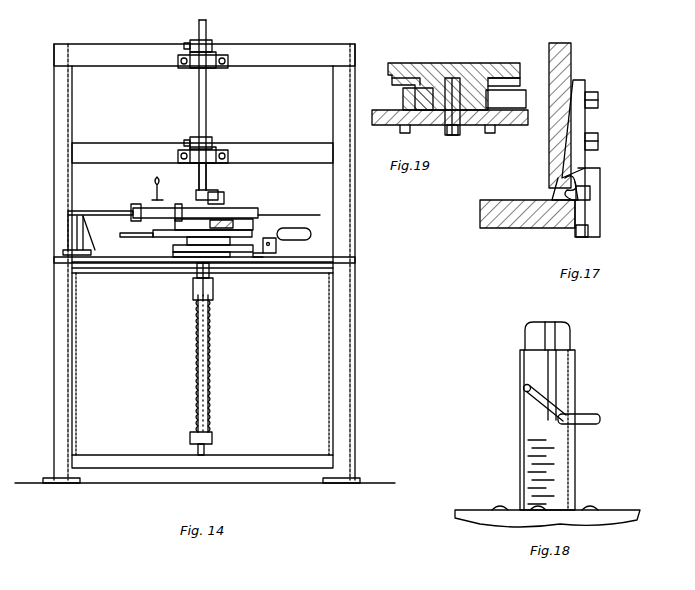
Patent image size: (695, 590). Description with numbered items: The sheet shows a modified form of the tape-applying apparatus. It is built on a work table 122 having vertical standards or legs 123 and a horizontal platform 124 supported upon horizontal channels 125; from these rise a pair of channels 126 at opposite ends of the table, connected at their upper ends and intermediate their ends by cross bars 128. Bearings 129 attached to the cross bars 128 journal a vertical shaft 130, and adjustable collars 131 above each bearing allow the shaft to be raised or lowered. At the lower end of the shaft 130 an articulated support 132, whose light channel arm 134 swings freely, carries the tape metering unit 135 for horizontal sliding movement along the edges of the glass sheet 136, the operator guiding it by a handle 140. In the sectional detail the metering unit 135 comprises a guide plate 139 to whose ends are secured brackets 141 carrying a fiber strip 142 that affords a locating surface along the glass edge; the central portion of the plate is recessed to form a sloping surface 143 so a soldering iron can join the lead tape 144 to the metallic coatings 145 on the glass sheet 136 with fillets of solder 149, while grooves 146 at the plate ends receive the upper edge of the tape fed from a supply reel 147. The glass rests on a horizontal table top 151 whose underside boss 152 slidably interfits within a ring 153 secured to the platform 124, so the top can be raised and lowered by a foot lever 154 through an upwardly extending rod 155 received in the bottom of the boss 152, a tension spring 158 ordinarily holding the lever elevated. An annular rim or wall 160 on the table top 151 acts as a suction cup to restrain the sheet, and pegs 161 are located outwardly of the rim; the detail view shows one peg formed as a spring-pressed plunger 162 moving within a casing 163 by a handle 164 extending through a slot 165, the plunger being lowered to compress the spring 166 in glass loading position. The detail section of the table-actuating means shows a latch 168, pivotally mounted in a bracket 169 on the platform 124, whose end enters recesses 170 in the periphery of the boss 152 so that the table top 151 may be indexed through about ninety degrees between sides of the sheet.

In FIG. 14, the work table 122 is at (345, 292).
In FIG. 14, the vertical standards or legs 123 is at (72, 360).
In FIG. 14, the horizontal platform 124 is at (103, 264).
In FIG. 19, the horizontal platform 124 is at (522, 122).
In FIG. 14, the horizontal channels 125 is at (131, 273).
In FIG. 14, the channels 126 is at (62, 180).
In FIG. 14, the cross bars 128 is at (285, 60).
In FIG. 14, the bearings 129 is at (218, 68).
In FIG. 14, the vertical shaft 130 is at (208, 103).
In FIG. 14, the adjustable collars 131 is at (210, 45).
In FIG. 14, the articulated support 132 is at (226, 198).
In FIG. 14, the arm 134 is at (175, 204).
In FIG. 14, the tape metering unit 135 is at (133, 206).
In FIG. 17, the tape metering unit 135 is at (562, 62).
In FIG. 14, the glass sheet 136 is at (250, 219).
In FIG. 17, the glass sheet 136 is at (520, 206).
In FIG. 17, the guide plate 139 is at (578, 95).
In FIG. 14, the handle 140 is at (153, 183).
In FIG. 17, the brackets 141 is at (600, 203).
In FIG. 17, the fiber strip 142 is at (580, 233).
In FIG. 17, the sloping surface 143 is at (572, 140).
In FIG. 14, the lead tape 144 is at (125, 211).
In FIG. 17, the lead tape 144 is at (568, 192).
In FIG. 17, the metallic coatings 145 is at (560, 200).
In FIG. 17, the grooves 146 is at (598, 155).
In FIG. 14, the supply reel 147 is at (88, 223).
In FIG. 17, the fillets of solder 149 is at (590, 186).
In FIG. 14, the table top 151 is at (155, 232).
In FIG. 19, the table top 151 is at (480, 66).
In FIG. 18, the table top 151 is at (622, 516).
In FIG. 14, the boss 152 is at (205, 248).
In FIG. 19, the boss 152 is at (442, 78).
In FIG. 14, the ring 153 is at (196, 283).
In FIG. 19, the ring 153 is at (405, 98).
In FIG. 14, the foot lever 154 is at (212, 437).
In FIG. 14, the rod 155 is at (206, 380).
In FIG. 19, the rod 155 is at (462, 132).
In FIG. 14, the tension spring 158 is at (210, 344).
In FIG. 14, the annular rim or wall 160 is at (215, 228).
In FIG. 14, the pegs 161 is at (175, 225).
In FIG. 18, the spring-pressed plunger 162 is at (575, 337).
In FIG. 14, the casing 163 is at (234, 224).
In FIG. 18, the casing 163 is at (558, 392).
In FIG. 18, the handle 164 is at (600, 419).
In FIG. 18, the slot 165 is at (538, 404).
In FIG. 18, the spring 166 is at (520, 470).
In FIG. 14, the latch 168 is at (298, 222).
In FIG. 19, the latch 168 is at (516, 100).
In FIG. 14, the bracket 169 is at (278, 245).
In FIG. 19, the recesses 170 is at (418, 80).